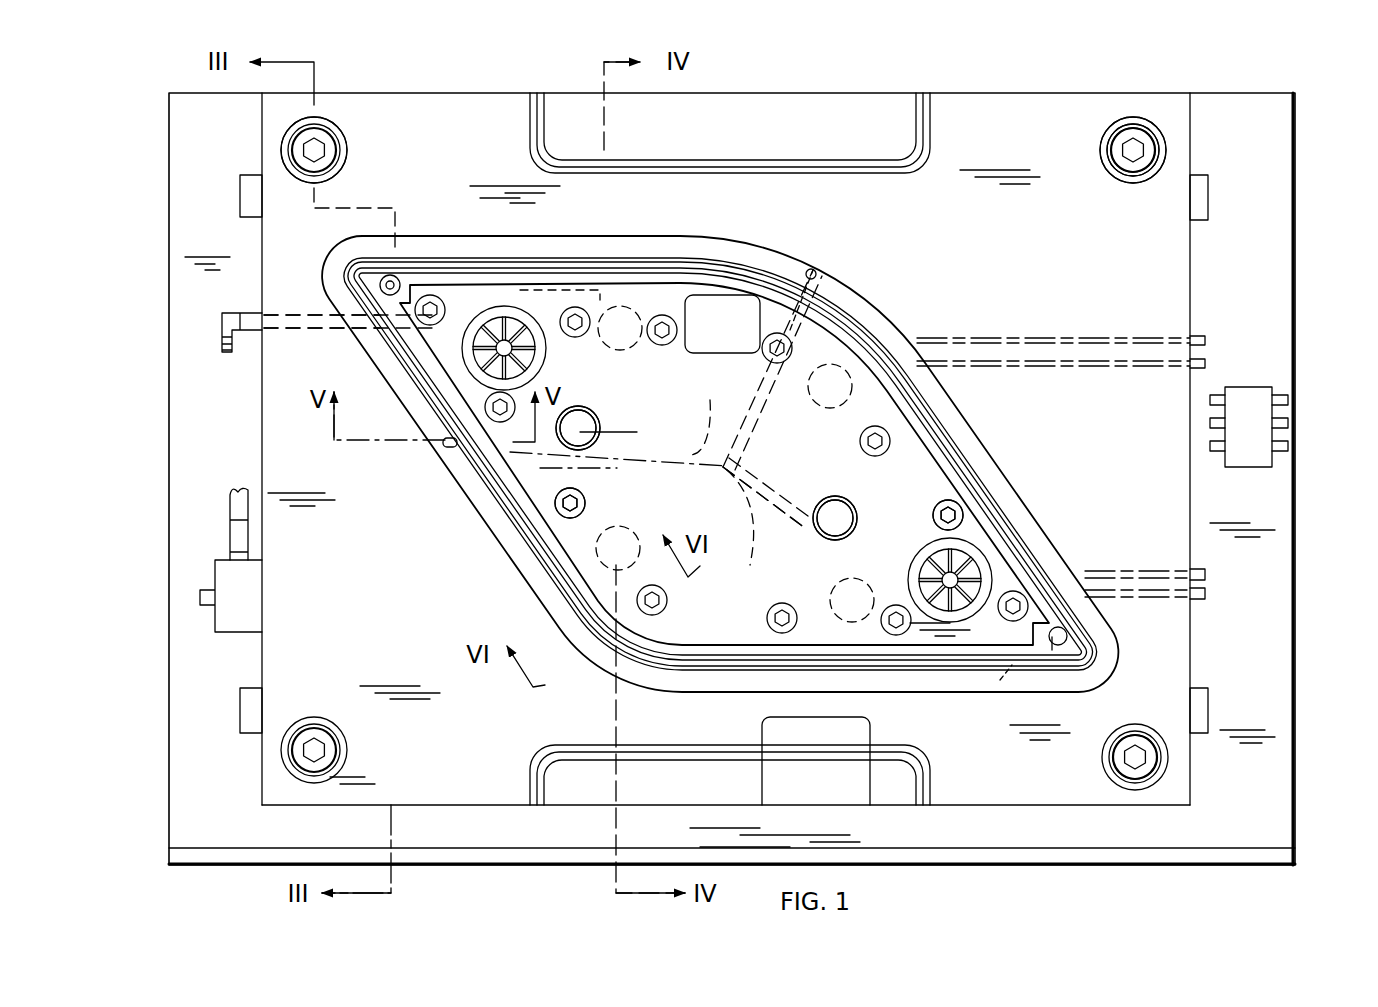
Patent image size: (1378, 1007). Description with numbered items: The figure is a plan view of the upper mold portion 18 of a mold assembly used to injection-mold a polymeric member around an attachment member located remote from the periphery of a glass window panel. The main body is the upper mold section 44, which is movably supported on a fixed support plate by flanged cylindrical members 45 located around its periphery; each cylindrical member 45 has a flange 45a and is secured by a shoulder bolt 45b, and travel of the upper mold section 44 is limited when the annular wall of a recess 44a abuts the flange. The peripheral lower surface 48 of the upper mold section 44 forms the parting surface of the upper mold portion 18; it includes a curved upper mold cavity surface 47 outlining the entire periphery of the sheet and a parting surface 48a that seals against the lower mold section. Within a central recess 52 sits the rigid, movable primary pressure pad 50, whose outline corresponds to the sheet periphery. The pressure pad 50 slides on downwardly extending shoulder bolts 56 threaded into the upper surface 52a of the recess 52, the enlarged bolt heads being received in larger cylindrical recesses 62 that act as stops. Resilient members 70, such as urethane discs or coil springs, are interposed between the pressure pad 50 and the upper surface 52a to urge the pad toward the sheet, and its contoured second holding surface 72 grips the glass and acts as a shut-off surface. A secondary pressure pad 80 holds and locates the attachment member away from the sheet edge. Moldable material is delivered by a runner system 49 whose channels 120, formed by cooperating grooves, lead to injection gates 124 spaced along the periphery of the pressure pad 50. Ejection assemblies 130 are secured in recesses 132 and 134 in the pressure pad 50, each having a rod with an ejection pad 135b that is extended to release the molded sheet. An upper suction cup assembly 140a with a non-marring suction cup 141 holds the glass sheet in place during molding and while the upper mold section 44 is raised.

The upper mold portion 18 is at (1182, 82).
The upper mold section 44 is at (1165, 265).
The recess 44a is at (340, 172).
The flanged cylindrical member 45 is at (323, 128).
The flange 45a is at (1128, 172).
The shoulder bolt 45b is at (1122, 130).
The upper mold cavity surface 47 is at (497, 480).
The lower surface 48 is at (348, 626).
The parting surface 48a is at (507, 527).
The runner system 49 is at (762, 478).
The primary pressure pad 50 is at (873, 408).
The central recess 52 is at (908, 450).
The upper surface of recess 52a is at (688, 521).
The shoulder bolt 56 is at (794, 347).
The cylindrical recess 62 is at (588, 508).
The resilient member 70 is at (630, 318).
The second holding surface 72 is at (457, 390).
The secondary pressure pad 80 is at (1071, 636).
The channel 120 is at (666, 430).
The injection gate 124 is at (818, 268).
The ejection assembly 130 is at (604, 403).
The recess 132 is at (598, 410).
The recess 134 is at (831, 507).
The ejection pad 135b is at (612, 432).
The upper suction cup assembly 140a is at (528, 298).
The suction cup 141 is at (983, 557).